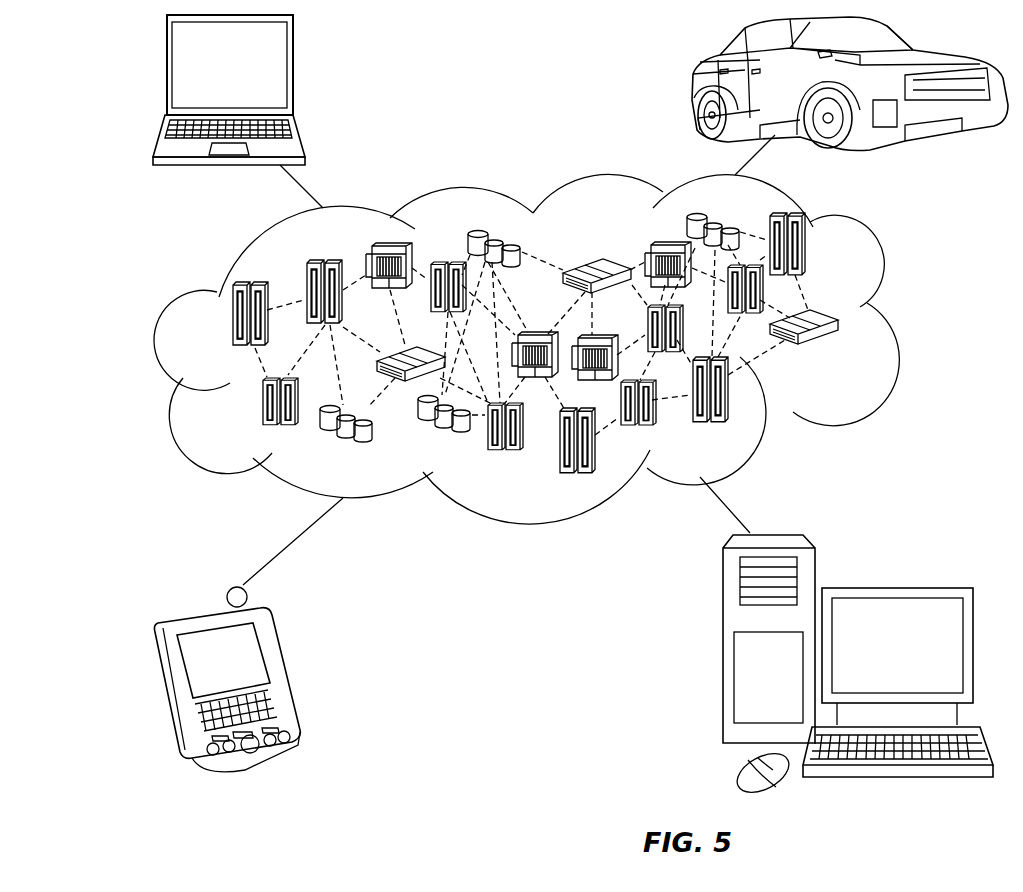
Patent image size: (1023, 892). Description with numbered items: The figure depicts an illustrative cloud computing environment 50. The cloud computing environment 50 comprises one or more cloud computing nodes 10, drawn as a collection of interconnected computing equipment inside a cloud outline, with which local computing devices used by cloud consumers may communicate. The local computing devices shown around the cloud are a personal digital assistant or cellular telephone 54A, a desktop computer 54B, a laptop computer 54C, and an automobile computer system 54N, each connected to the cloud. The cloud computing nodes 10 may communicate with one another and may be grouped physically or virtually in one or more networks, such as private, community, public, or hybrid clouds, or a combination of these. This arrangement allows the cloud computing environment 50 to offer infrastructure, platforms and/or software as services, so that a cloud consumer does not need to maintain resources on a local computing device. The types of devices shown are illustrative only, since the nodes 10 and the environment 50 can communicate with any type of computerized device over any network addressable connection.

The cloud computing node 10 is at (843, 348).
The cloud computing environment 50 is at (897, 328).
The personal digital assistant or cellular telephone 54A is at (282, 673).
The desktop computer 54B is at (893, 588).
The laptop computer 54C is at (297, 73).
The automobile computer system 54N is at (697, 88).